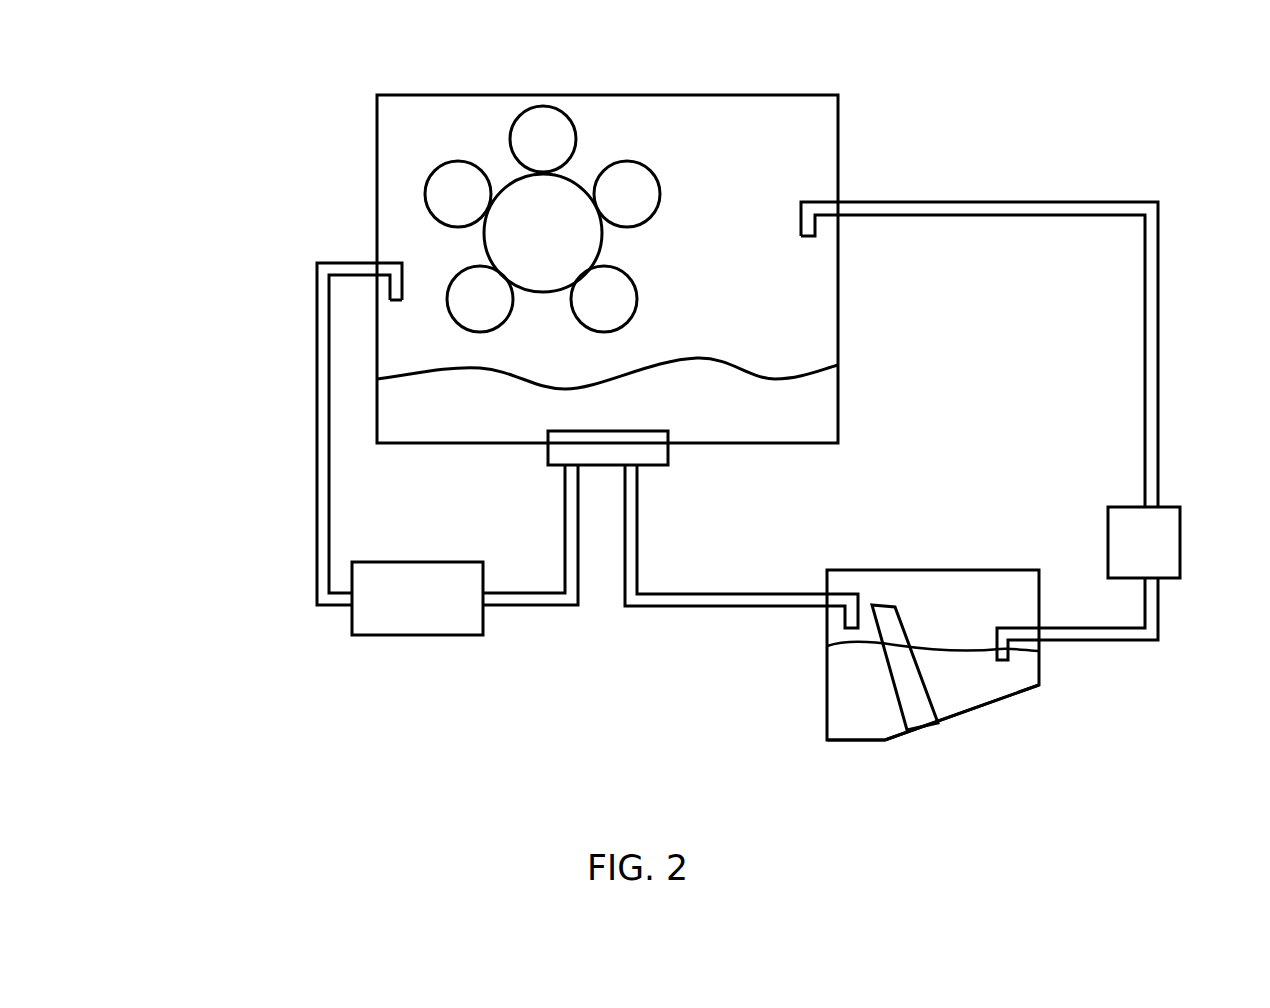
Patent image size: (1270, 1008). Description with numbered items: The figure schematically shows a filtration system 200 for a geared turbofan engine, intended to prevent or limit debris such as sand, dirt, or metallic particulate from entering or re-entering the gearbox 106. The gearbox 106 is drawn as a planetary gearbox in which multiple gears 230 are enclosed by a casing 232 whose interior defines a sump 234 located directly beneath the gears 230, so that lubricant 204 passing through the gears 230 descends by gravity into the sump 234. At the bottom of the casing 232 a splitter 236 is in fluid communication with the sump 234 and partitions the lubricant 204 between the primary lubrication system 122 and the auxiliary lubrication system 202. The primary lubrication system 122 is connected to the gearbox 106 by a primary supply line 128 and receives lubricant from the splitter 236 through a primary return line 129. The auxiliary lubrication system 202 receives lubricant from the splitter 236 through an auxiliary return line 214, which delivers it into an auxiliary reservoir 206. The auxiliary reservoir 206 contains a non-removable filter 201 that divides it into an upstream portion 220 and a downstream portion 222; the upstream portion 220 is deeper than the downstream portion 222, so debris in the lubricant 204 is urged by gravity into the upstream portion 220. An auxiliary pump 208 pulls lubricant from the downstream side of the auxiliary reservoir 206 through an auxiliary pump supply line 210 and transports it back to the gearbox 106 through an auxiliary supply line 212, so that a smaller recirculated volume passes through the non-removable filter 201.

The filtration system 200 is at (258, 79).
The casing 232 is at (442, 95).
The gears 230 is at (576, 132).
The gearbox 106 is at (862, 145).
The sump 234 is at (794, 358).
The lubricant 204 is at (825, 403).
The splitter 236 is at (668, 431).
The auxiliary supply line 212 is at (1159, 423).
The primary supply line 128 is at (316, 466).
The primary lubrication system 122 is at (425, 655).
The primary return line 129 is at (560, 607).
The auxiliary return line 214 is at (638, 535).
The auxiliary reservoir 206 is at (920, 570).
The non-removable filter 201 is at (928, 706).
The upstream portion 220 is at (872, 742).
The downstream portion 222 is at (1015, 690).
The auxiliary pump 208 is at (1107, 524).
The auxiliary pump supply line 210 is at (1159, 626).
The auxiliary lubrication system 202 is at (1153, 705).